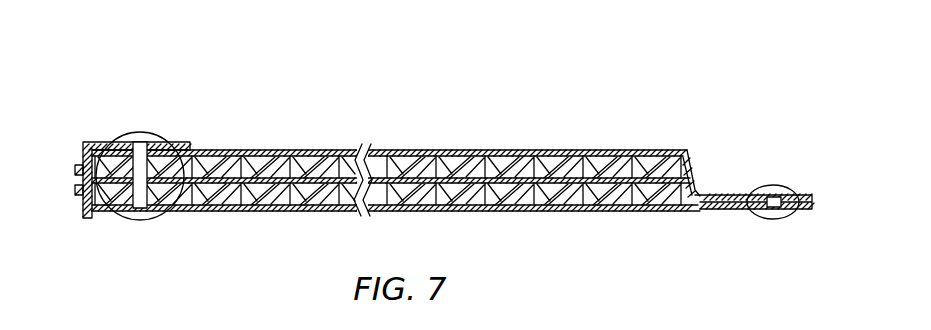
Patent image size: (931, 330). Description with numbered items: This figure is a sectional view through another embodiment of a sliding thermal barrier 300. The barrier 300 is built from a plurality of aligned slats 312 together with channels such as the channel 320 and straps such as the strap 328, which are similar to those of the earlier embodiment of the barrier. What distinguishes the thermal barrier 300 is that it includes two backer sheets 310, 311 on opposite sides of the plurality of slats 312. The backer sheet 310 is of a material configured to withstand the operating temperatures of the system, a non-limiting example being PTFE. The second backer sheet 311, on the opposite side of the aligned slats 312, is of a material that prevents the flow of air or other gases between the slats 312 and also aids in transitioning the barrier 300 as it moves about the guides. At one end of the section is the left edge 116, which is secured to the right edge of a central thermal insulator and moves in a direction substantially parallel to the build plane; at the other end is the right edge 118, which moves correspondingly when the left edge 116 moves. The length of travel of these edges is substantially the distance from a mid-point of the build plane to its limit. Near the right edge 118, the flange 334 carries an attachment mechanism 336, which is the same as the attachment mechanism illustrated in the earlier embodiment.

The thermal barrier 300 is at (425, 102).
The backer sheet 310 is at (220, 211).
The second backer sheet 311 is at (318, 149).
The slats 312 is at (260, 149).
The channel 320 is at (472, 180).
The strap 328 is at (553, 182).
The left edge 116 is at (91, 207).
The right edge 118 is at (813, 208).
The flange 334 is at (801, 196).
The attachment mechanism 336 is at (773, 190).